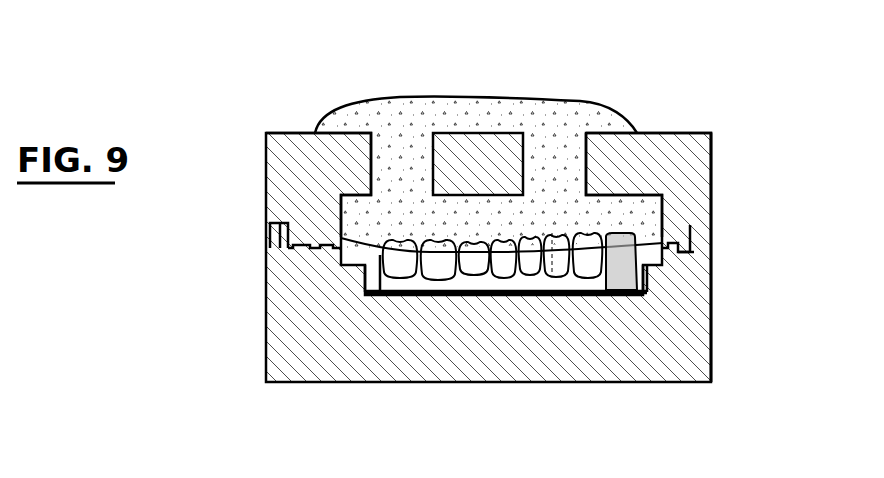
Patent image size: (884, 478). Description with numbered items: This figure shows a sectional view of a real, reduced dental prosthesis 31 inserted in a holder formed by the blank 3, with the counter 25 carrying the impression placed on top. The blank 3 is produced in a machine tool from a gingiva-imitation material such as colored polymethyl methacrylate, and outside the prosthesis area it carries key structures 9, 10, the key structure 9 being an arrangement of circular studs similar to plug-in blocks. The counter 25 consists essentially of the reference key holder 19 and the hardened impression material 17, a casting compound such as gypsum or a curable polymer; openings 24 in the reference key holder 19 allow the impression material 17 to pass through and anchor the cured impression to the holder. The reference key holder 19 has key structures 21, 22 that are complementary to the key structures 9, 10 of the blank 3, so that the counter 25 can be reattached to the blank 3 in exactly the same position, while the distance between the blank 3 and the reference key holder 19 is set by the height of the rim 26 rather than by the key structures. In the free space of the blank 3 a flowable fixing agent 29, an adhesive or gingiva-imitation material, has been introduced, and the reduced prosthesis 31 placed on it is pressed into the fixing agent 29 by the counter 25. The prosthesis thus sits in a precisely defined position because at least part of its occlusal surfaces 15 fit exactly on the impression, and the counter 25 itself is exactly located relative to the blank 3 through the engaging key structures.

The blank 3 is at (763, 313).
The key structure 9 is at (315, 254).
The key structure 10 is at (677, 252).
The occlusal surfaces 15 is at (415, 238).
The impression material 17 is at (483, 110).
The reference key holder 19 is at (663, 133).
The key structure 21 is at (315, 242).
The key structure 22 is at (678, 238).
The openings 24 is at (432, 152).
The counter 25 is at (763, 172).
The rim 26 is at (272, 231).
The fixing agent 29 is at (405, 295).
The reduced prosthesis 31 is at (458, 276).